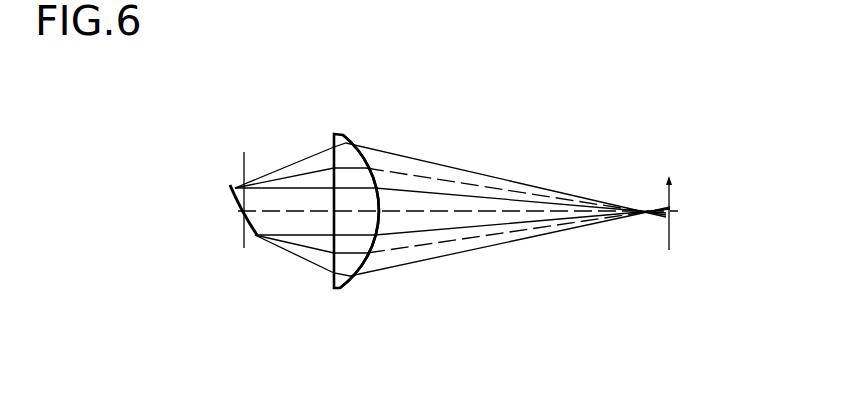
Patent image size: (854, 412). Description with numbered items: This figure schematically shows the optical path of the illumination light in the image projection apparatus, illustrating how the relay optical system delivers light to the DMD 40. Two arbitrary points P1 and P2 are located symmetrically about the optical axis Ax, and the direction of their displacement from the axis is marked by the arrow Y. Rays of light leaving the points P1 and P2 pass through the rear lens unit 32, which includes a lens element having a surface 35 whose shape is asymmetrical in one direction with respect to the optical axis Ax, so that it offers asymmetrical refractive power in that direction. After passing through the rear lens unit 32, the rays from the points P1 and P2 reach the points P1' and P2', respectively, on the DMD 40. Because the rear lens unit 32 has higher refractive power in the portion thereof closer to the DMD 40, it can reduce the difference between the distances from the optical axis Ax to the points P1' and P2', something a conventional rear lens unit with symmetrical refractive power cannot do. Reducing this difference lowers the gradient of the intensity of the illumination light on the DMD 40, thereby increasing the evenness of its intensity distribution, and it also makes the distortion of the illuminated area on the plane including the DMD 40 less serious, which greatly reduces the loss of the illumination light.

The DMD 40 is at (240, 200).
The surface 35 is at (335, 267).
The rear lens unit 32 is at (355, 265).
The optical axis Ax is at (478, 215).
The point P1' is at (414, 180).
The point P2' is at (441, 250).
The point P1 is at (688, 230).
The point P2 is at (682, 192).
The Y direction Y is at (670, 194).